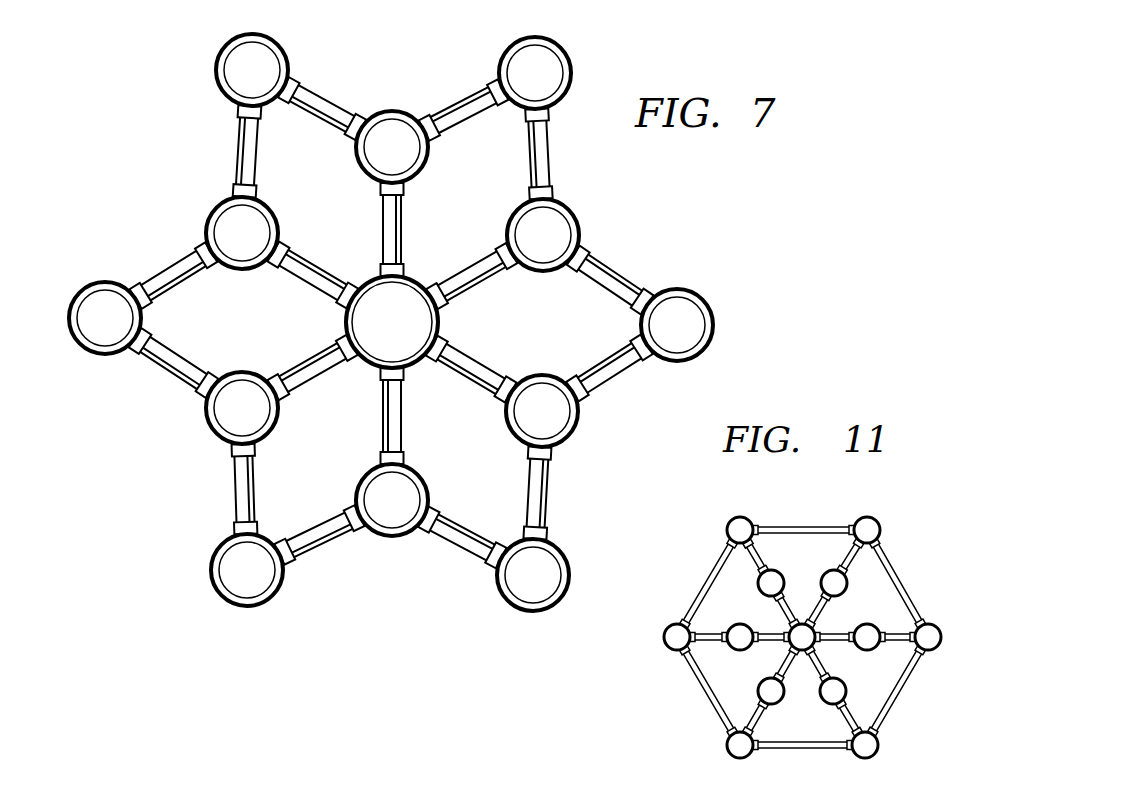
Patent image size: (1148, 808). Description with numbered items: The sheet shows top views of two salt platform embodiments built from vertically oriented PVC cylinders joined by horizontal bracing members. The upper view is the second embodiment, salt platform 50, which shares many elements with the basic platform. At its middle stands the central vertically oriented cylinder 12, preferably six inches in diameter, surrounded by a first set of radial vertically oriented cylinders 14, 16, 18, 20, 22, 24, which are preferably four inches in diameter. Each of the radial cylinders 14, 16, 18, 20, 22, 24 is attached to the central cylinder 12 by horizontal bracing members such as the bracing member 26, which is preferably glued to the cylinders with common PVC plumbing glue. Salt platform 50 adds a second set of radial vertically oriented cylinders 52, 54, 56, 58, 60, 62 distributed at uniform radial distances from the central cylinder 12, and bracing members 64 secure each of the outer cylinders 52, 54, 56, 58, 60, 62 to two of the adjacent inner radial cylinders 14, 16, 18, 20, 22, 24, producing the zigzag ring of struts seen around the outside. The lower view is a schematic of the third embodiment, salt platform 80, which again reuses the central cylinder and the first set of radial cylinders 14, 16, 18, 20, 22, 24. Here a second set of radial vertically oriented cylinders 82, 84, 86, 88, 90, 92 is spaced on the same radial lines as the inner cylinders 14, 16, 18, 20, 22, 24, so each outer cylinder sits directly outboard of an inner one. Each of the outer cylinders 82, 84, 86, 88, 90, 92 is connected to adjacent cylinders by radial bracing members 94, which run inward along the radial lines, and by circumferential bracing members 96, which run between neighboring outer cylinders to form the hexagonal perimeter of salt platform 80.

In FIG. 7, the central vertically oriented cylinder 12 is at (416, 284).
In FIG. 7, the radial vertically oriented cylinder 14 is at (216, 216).
In FIG. 11, the radial vertically oriented cylinder 14 is at (784, 578).
In FIG. 7, the radial vertically oriented cylinder 16 is at (392, 110).
In FIG. 11, the radial vertically oriented cylinder 16 is at (847, 585).
In FIG. 7, the radial vertically oriented cylinder 18 is at (574, 215).
In FIG. 11, the radial vertically oriented cylinder 18 is at (867, 624).
In FIG. 7, the radial vertically oriented cylinder 20 is at (573, 434).
In FIG. 11, the radial vertically oriented cylinder 20 is at (822, 702).
In FIG. 7, the radial vertically oriented cylinder 22 is at (392, 538).
In FIG. 11, the radial vertically oriented cylinder 22 is at (760, 684).
In FIG. 7, the radial vertically oriented cylinder 24 is at (213, 433).
In FIG. 11, the radial vertically oriented cylinder 24 is at (740, 624).
In FIG. 7, the horizontal bracing member 26 is at (318, 271).
In FIG. 7, the salt platform 50 is at (652, 206).
In FIG. 7, the radial vertically oriented cylinder 52 is at (222, 66).
In FIG. 7, the radial vertically oriented cylinder 54 is at (569, 80).
In FIG. 7, the radial vertically oriented cylinder 56 is at (680, 290).
In FIG. 7, the radial vertically oriented cylinder 58 is at (569, 582).
In FIG. 7, the radial vertically oriented cylinder 60 is at (212, 577).
In FIG. 7, the radial vertically oriented cylinder 62 is at (105, 283).
In FIG. 7, the bracing member 64 is at (233, 152).
In FIG. 11, the salt platform 80 is at (656, 664).
In FIG. 11, the radial vertically oriented cylinder 82 is at (737, 517).
In FIG. 11, the radial vertically oriented cylinder 84 is at (870, 517).
In FIG. 11, the radial vertically oriented cylinder 86 is at (928, 624).
In FIG. 11, the radial vertically oriented cylinder 88 is at (880, 747).
In FIG. 11, the radial vertically oriented cylinder 90 is at (726, 745).
In FIG. 11, the radial vertically oriented cylinder 92 is at (673, 624).
In FIG. 11, the radial bracing member 94 is at (857, 714).
In FIG. 11, the circumferential bracing member 96 is at (700, 690).